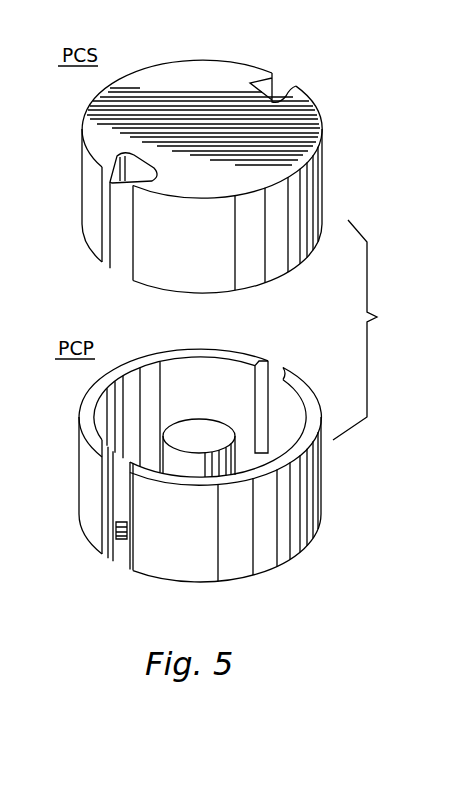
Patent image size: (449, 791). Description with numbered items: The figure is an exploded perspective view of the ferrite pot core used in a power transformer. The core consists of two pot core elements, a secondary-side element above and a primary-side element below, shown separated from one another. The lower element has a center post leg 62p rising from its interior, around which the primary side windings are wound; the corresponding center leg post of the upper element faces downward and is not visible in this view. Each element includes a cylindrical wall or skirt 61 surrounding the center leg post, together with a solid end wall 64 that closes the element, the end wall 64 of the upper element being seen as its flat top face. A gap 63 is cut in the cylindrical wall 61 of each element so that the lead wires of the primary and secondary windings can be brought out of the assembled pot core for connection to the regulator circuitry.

The cylindrical wall 61 is at (90, 204).
The gap 63 is at (280, 91).
The solid end wall 64 is at (212, 82).
The center post leg 62p is at (210, 427).